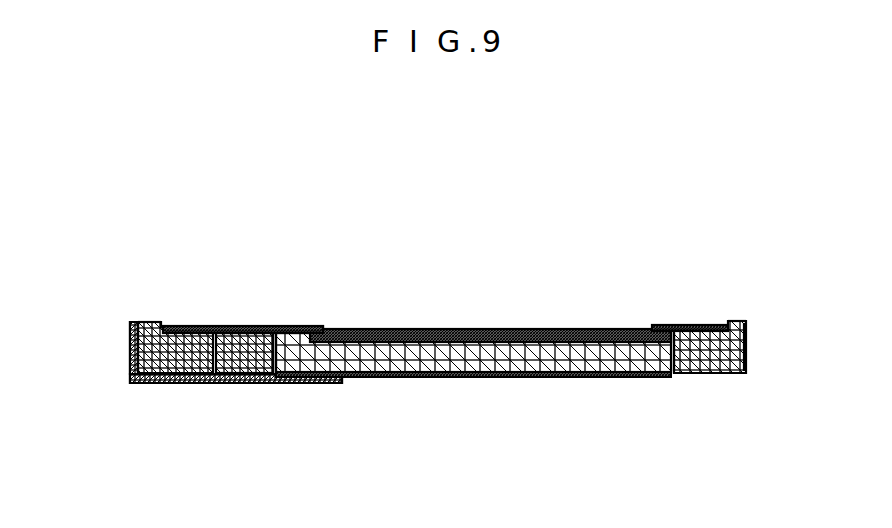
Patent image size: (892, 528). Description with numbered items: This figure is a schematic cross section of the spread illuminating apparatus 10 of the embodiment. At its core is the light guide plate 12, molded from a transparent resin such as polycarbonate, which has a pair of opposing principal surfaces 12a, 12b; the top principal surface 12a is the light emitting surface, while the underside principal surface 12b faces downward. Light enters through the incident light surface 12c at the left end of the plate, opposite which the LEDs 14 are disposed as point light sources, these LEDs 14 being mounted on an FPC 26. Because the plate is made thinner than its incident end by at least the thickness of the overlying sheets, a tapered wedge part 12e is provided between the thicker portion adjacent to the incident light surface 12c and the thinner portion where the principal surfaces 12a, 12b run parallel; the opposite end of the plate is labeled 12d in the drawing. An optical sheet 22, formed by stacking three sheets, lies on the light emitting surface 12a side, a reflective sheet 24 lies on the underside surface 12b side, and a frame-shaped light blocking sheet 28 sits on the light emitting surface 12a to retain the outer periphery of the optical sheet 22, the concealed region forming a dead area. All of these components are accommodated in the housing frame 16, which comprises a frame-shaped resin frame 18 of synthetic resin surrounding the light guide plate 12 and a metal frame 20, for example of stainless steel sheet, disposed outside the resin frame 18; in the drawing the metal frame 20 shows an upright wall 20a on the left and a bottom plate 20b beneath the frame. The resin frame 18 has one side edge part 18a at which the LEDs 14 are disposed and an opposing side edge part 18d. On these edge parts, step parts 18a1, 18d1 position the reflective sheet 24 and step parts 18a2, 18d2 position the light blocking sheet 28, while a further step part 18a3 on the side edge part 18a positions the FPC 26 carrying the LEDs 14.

The spread illuminating apparatus 10 is at (510, 250).
The light guide plate 12 is at (455, 352).
The principal surface 12a is at (552, 333).
The principal surface 12b is at (592, 375).
The incident light surface 12c is at (253, 328).
The second end portion of substrate 12d is at (693, 327).
The wedge part 12e is at (307, 327).
The LED 14 is at (237, 378).
The housing frame 16 is at (140, 325).
The resin frame 18 is at (440, 337).
The side edge part 18a is at (130, 343).
The step part 18a1 is at (183, 374).
The step part 18a2 is at (158, 322).
The step part 18a3 is at (182, 327).
The side edge part 18d is at (747, 350).
The step part 18d1 is at (702, 375).
The step part 18d2 is at (727, 325).
The metal frame 20 is at (203, 394).
The side wall of holder 20a is at (130, 335).
The bottom plate of holder 20b is at (317, 383).
The optical sheet 22 is at (433, 331).
The reflective sheet 24 is at (528, 376).
The FPC 26 is at (274, 332).
The light blocking sheet 28 is at (200, 326).